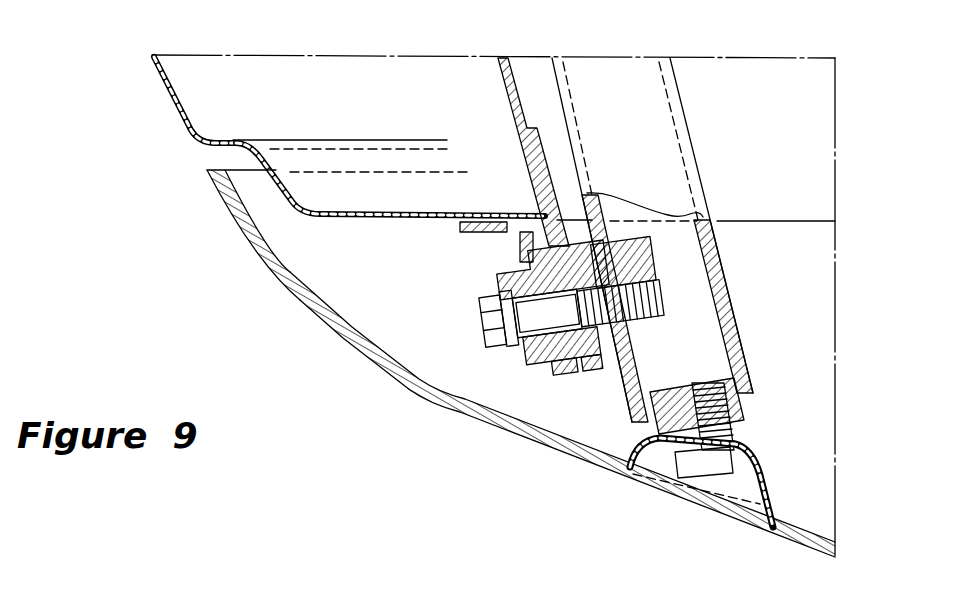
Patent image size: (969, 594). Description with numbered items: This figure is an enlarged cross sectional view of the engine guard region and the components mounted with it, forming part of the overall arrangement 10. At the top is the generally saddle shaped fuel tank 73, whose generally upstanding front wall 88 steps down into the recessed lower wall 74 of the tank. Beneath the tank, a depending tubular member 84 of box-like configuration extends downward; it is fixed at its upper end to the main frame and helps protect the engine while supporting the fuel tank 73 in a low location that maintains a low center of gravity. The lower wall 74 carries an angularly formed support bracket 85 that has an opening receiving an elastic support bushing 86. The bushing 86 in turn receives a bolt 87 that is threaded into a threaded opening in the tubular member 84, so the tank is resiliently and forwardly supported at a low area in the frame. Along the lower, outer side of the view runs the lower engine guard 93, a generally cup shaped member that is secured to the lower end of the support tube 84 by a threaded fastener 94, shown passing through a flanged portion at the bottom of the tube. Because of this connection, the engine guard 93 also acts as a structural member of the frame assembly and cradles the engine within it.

The vehicle body structure assembly 10 is at (418, 333).
The fuel tank 73 is at (154, 88).
The front wall 88 is at (185, 134).
The lower wall 74 is at (323, 219).
The lower engine guard 93 is at (342, 333).
The support bracket 85 is at (510, 240).
The depending tubular member 84 is at (712, 345).
The bolt 87 is at (487, 320).
The elastic support bushing 86 is at (578, 345).
The threaded fastener 94 is at (688, 473).